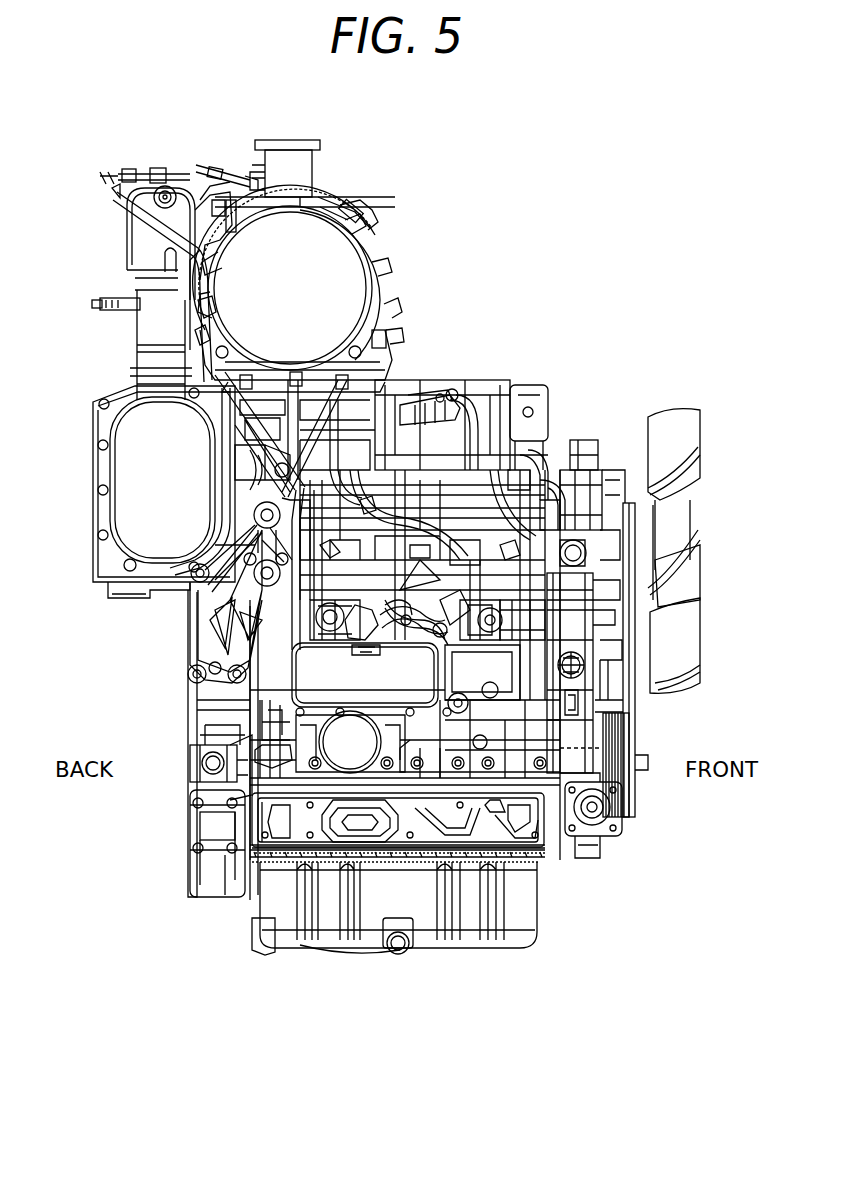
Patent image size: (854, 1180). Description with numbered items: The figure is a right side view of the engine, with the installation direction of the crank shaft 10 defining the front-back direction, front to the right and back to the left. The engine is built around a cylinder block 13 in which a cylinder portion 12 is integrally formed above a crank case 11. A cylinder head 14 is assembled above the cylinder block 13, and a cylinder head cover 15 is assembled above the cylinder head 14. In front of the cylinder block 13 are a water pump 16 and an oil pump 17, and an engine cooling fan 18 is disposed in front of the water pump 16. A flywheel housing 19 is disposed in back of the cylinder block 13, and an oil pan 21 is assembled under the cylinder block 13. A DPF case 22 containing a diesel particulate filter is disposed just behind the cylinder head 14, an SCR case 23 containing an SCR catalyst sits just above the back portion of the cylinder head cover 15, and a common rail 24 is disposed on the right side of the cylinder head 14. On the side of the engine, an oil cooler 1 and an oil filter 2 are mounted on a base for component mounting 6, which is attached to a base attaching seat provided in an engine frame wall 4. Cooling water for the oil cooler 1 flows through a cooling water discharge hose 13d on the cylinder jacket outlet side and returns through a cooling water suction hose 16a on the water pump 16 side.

The oil cooler 1 is at (410, 739).
The oil filter 2 is at (348, 748).
The engine frame wall 4 is at (240, 767).
The base for component mounting 6 is at (200, 742).
The crank shaft 10 is at (605, 805).
The crank case 11 is at (560, 860).
The cylinder portion 12 is at (598, 700).
The cylinder block 13 is at (517, 823).
The cooling water discharge hose 13d is at (313, 603).
The cylinder head 14 is at (553, 448).
The cylinder head cover 15 is at (513, 410).
The water pump 16 is at (630, 554).
The cooling water suction hose 16a is at (408, 625).
The oil pump 17 is at (627, 770).
The engine cooling fan 18 is at (693, 425).
The flywheel housing 19 is at (196, 710).
The oil pan 21 is at (523, 920).
The DPF case 22 is at (130, 430).
The SCR case 23 is at (315, 240).
The common rail 24 is at (443, 382).